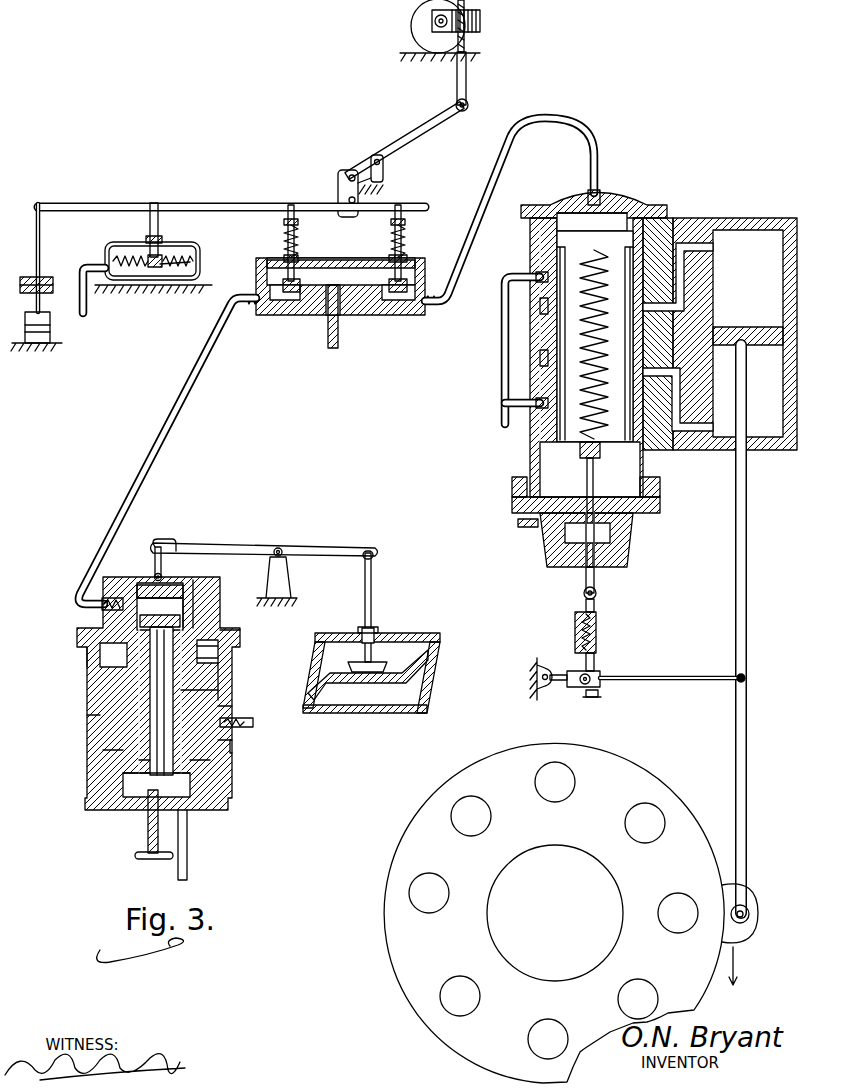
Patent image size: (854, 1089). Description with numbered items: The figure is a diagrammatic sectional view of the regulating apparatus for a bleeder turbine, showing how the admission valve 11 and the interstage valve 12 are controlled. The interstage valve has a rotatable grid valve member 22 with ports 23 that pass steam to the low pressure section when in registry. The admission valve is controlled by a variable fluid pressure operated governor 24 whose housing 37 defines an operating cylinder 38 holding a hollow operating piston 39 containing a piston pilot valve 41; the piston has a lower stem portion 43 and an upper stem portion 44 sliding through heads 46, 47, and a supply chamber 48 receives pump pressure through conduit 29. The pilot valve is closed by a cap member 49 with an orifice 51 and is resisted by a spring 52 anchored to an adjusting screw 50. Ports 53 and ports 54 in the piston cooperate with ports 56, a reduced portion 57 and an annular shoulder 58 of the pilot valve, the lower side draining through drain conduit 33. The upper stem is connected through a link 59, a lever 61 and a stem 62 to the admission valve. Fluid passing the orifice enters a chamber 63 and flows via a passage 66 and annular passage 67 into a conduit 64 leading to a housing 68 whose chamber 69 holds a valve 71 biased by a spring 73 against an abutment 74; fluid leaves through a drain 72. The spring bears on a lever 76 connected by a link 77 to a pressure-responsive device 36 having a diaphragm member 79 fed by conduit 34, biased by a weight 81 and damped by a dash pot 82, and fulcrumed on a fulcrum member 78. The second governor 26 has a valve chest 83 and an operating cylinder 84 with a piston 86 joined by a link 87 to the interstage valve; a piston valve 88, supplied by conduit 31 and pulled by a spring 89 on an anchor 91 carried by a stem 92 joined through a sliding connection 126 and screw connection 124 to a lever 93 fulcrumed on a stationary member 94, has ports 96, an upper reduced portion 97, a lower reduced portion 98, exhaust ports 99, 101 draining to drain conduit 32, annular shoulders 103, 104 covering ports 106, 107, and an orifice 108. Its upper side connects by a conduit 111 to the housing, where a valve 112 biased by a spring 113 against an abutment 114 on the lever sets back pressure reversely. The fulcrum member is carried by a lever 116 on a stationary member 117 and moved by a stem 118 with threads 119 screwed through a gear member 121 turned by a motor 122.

The admission valve 11 is at (385, 664).
The interstage valve 12 is at (755, 890).
The grid valve member 22 is at (660, 790).
The ports 23 is at (468, 803).
The variable fluid pressure operated governor 24 is at (50, 706).
The variable fluid pressure operated governor 26 is at (457, 414).
The conduit 29 is at (189, 841).
The conduit 31 is at (520, 524).
The drain conduit 32 is at (503, 325).
The drain conduit 33 is at (254, 722).
The conduit 34 is at (86, 305).
The pressure-responsive device 36 is at (202, 260).
The housing 37 is at (209, 765).
The operating cylinder 38 is at (222, 672).
The operating piston 39 is at (214, 690).
The piston pilot valve 41 is at (110, 754).
The lower stem portion 43 is at (140, 765).
The upper stem portion 44 is at (200, 612).
The head 46 is at (227, 752).
The head 47 is at (240, 632).
The supply chamber 48 is at (182, 781).
The cap member 49 is at (160, 606).
The adjusting screw 50 is at (135, 855).
The orifice 51 is at (160, 605).
The spring 52 is at (142, 800).
The ports 53 is at (93, 652).
The ports 54 is at (99, 722).
The ports 56 is at (222, 648).
The reduced portion 57 is at (222, 712).
The annular shoulder 58 is at (222, 660).
The link 59 is at (154, 560).
The lever 61 is at (247, 546).
The stem 62 is at (372, 601).
The chamber 63 is at (174, 580).
The conduit 64 is at (163, 449).
The passage 66 is at (219, 598).
The annular passage 67 is at (100, 610).
The housing 68 is at (306, 318).
The chamber 69 is at (336, 263).
The valve 71 is at (298, 276).
The drain 72 is at (340, 340).
The spring 73 is at (283, 236).
The abutment 74 is at (297, 222).
The lever 76 is at (263, 205).
The link 77 is at (159, 221).
The fulcrum member 78 is at (368, 186).
The diaphragm member 79 is at (163, 268).
The weight 81 is at (52, 285).
The dash pot 82 is at (50, 336).
The valve chest 83 is at (532, 240).
The operating cylinder 84 is at (752, 229).
The piston 86 is at (746, 336).
The link 87 is at (749, 620).
The piston valve 88 is at (631, 207).
The spring 89 is at (582, 453).
The anchor 91 is at (594, 463).
The stem 92 is at (595, 581).
The lever 93 is at (650, 680).
The stationary member 94 is at (541, 691).
The ports 96 is at (563, 342).
The upper reduced portion 97 is at (503, 286).
The lower reduced portion 98 is at (523, 430).
The exhaust port 99 is at (537, 277).
The exhaust port 101 is at (536, 401).
The annular shoulder 103 is at (540, 305).
The annular shoulder 104 is at (540, 364).
The port 106 is at (703, 288).
The port 107 is at (700, 370).
The orifice 108 is at (610, 213).
The conduit 111 is at (556, 118).
The valve 112 is at (408, 260).
The spring 113 is at (407, 238).
The abutment 114 is at (405, 207).
The lever 116 is at (410, 125).
The stationary member 117 is at (362, 152).
The stem 118 is at (466, 76).
The threads 119 is at (465, 43).
The gear member 121 is at (480, 18).
The motor 122 is at (413, 22).
The screw connection 124 is at (597, 634).
The sliding connection 126 is at (580, 690).